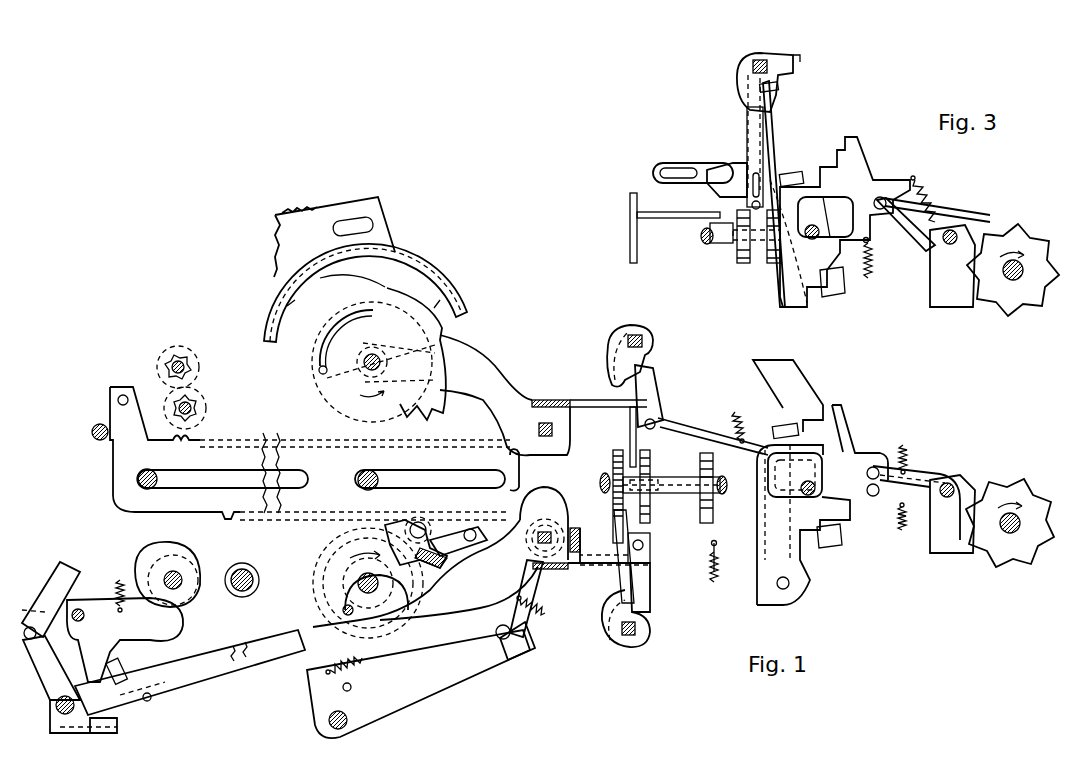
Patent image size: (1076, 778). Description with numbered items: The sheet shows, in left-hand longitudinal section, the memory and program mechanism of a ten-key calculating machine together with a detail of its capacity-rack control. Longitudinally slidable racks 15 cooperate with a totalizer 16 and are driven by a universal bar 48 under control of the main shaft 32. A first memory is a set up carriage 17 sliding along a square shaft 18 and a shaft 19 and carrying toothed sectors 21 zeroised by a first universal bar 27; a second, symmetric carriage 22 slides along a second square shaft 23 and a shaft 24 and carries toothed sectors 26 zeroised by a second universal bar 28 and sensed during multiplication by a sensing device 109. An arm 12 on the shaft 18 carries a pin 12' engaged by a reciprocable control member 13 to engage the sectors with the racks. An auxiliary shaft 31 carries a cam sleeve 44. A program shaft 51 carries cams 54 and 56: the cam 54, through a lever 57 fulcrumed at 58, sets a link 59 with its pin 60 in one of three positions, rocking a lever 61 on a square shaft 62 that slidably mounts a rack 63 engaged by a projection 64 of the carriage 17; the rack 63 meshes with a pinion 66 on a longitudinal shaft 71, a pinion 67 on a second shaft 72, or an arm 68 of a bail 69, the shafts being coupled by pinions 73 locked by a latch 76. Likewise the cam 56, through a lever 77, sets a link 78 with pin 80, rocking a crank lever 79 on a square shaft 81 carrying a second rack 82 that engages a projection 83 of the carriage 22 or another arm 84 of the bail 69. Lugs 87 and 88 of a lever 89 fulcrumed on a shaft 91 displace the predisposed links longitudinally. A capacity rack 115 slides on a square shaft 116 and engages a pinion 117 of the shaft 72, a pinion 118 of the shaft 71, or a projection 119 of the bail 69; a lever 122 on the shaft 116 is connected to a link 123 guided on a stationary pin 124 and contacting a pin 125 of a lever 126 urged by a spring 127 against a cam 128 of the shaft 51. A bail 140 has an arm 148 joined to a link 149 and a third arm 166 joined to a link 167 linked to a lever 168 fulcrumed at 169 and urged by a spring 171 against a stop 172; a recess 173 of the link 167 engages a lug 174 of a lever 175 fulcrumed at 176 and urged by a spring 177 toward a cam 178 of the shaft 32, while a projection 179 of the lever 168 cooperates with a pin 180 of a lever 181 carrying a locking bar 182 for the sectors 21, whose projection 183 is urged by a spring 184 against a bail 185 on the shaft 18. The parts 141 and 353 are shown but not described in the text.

In FIG. 1, the arm 12 is at (464, 554).
In FIG. 1, the pin 12' is at (428, 518).
In FIG. 1, the control member 13 is at (400, 520).
In FIG. 1, the racks 15 is at (268, 440).
In FIG. 1, the totalizer 16 is at (218, 386).
In FIG. 1, the set up carriage 17 is at (438, 614).
In FIG. 1, the square shaft 18 is at (550, 528).
In FIG. 1, the shaft 19 is at (358, 583).
In FIG. 1, the toothed sector 21 is at (330, 555).
In FIG. 1, the second set up carriage 22 is at (462, 336).
In FIG. 1, the second square shaft 23 is at (538, 429).
In FIG. 1, the shaft 24 is at (372, 372).
In FIG. 1, the toothed sector 26 is at (330, 402).
In FIG. 1, the first universal bar 27 is at (340, 610).
In FIG. 1, the second universal bar 28 is at (320, 367).
In FIG. 1, the shaft 31 is at (252, 570).
In FIG. 1, the main shaft 32 is at (180, 585).
In FIG. 1, the sleeve 44 is at (243, 592).
In FIG. 1, the universal bar 48 is at (96, 424).
In FIG. 1, the program shaft 51 is at (1005, 532).
In FIG. 3, the program shaft 51 is at (1005, 278).
In FIG. 1, the cam 54 is at (1030, 482).
In FIG. 1, the cam 56 is at (985, 478).
In FIG. 1, the lever 57 is at (960, 470).
In FIG. 1, the fulcrum 58 is at (942, 483).
In FIG. 3, the fulcrum 58 is at (932, 245).
In FIG. 1, the link 59 is at (752, 550).
In FIG. 1, the pin 60 is at (878, 468).
In FIG. 1, the lever 61 is at (650, 598).
In FIG. 1, the square shaft 62 is at (632, 640).
In FIG. 1, the rack 63 is at (616, 535).
In FIG. 1, the projection 64 is at (610, 570).
In FIG. 1, the pinion 66 is at (612, 465).
In FIG. 1, the pinion 67 is at (660, 498).
In FIG. 1, the arm 68 is at (666, 522).
In FIG. 3, the arm 68 is at (630, 240).
In FIG. 1, the bail 69 is at (650, 460).
In FIG. 3, the bail 69 is at (658, 210).
In FIG. 1, the longitudinal shaft 71 is at (600, 480).
In FIG. 3, the longitudinal shaft 71 is at (715, 243).
In FIG. 1, the second shaft 72 is at (724, 494).
In FIG. 3, the second shaft 72 is at (700, 240).
In FIG. 1, the pinions 73 is at (700, 462).
In FIG. 1, the latch 76 is at (710, 572).
In FIG. 1, the lever 77 is at (935, 553).
In FIG. 1, the second link 78 is at (688, 432).
In FIG. 1, the crank lever 79 is at (668, 372).
In FIG. 1, the pin 80 is at (876, 497).
In FIG. 1, the square shaft 81 is at (642, 337).
In FIG. 1, the second rack 82 is at (629, 420).
In FIG. 1, the projection 83 is at (590, 397).
In FIG. 1, the arm 84 is at (613, 448).
In FIG. 3, the arm 84 is at (630, 195).
In FIG. 1, the lug 87 is at (780, 424).
In FIG. 3, the lug 87 is at (792, 172).
In FIG. 1, the lug 88 is at (830, 548).
In FIG. 3, the lug 88 is at (840, 297).
In FIG. 1, the lever 89 is at (843, 533).
In FIG. 3, the lever 89 is at (872, 278).
In FIG. 1, the shaft 91 is at (800, 485).
In FIG. 3, the shaft 91 is at (818, 228).
In FIG. 1, the sensing device 109 is at (412, 232).
In FIG. 3, the capacity rack 115 is at (786, 112).
In FIG. 3, the square shaft 116 is at (768, 64).
In FIG. 3, the pinion 117 is at (775, 262).
In FIG. 3, the gear 118 is at (742, 263).
In FIG. 3, the projection 119 is at (745, 195).
In FIG. 3, the lever 122 is at (778, 88).
In FIG. 3, the link 123 is at (724, 165).
In FIG. 3, the stationary pin 124 is at (667, 172).
In FIG. 3, the pin 125 is at (885, 210).
In FIG. 3, the lever 126 is at (950, 214).
In FIG. 3, the spring 127 is at (937, 188).
In FIG. 3, the cam 128 is at (1018, 225).
In FIG. 1, the bail 140 is at (50, 722).
In FIG. 1, the pivot 141 is at (74, 708).
In FIG. 1, the arm 148 is at (40, 680).
In FIG. 1, the link 149 is at (50, 580).
In FIG. 1, the third arm 166 is at (90, 660).
In FIG. 1, the link 167 is at (232, 672).
In FIG. 1, the lever 168 is at (405, 698).
In FIG. 1, the fulcrum 169 is at (328, 720).
In FIG. 1, the spring 171 is at (364, 658).
In FIG. 1, the stationary stop 172 is at (351, 685).
In FIG. 1, the recess 173 is at (124, 668).
In FIG. 1, the lug 174 is at (150, 700).
In FIG. 1, the lever 175 is at (105, 600).
In FIG. 1, the fulcrum 176 is at (80, 608).
In FIG. 1, the spring 177 is at (122, 580).
In FIG. 1, the cam 178 is at (200, 555).
In FIG. 1, the projection 179 is at (520, 650).
In FIG. 1, the pin 180 is at (496, 632).
In FIG. 1, the lever 181 is at (533, 590).
In FIG. 1, the locking bar 182 is at (430, 565).
In FIG. 1, the projection 183 is at (584, 550).
In FIG. 1, the spring 184 is at (548, 613).
In FIG. 1, the bail 185 is at (578, 526).
In FIG. 3, the stop 353 is at (800, 60).